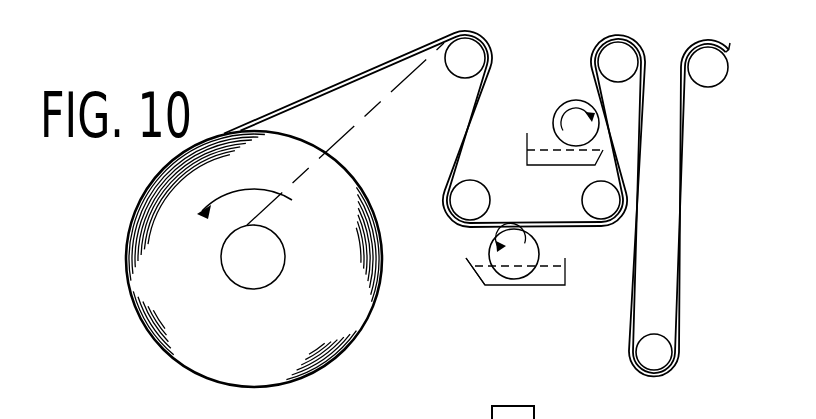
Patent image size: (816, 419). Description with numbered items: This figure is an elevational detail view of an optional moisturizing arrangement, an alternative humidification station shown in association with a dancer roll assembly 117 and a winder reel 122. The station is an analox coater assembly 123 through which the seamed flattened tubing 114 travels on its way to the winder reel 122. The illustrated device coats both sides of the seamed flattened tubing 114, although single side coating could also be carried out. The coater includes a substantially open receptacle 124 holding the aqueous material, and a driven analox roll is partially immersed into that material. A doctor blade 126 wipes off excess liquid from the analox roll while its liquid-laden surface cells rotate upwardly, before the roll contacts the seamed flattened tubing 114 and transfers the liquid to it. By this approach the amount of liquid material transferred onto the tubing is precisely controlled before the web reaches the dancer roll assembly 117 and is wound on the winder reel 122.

The seamed flattened tubing 114 is at (644, 72).
The dancer roll assembly 117 is at (664, 357).
The winder reel 122 is at (268, 342).
The analox coater assembly 123 is at (460, 272).
The substantially open receptacle 124 is at (527, 153).
The doctor blade 126 is at (552, 124).